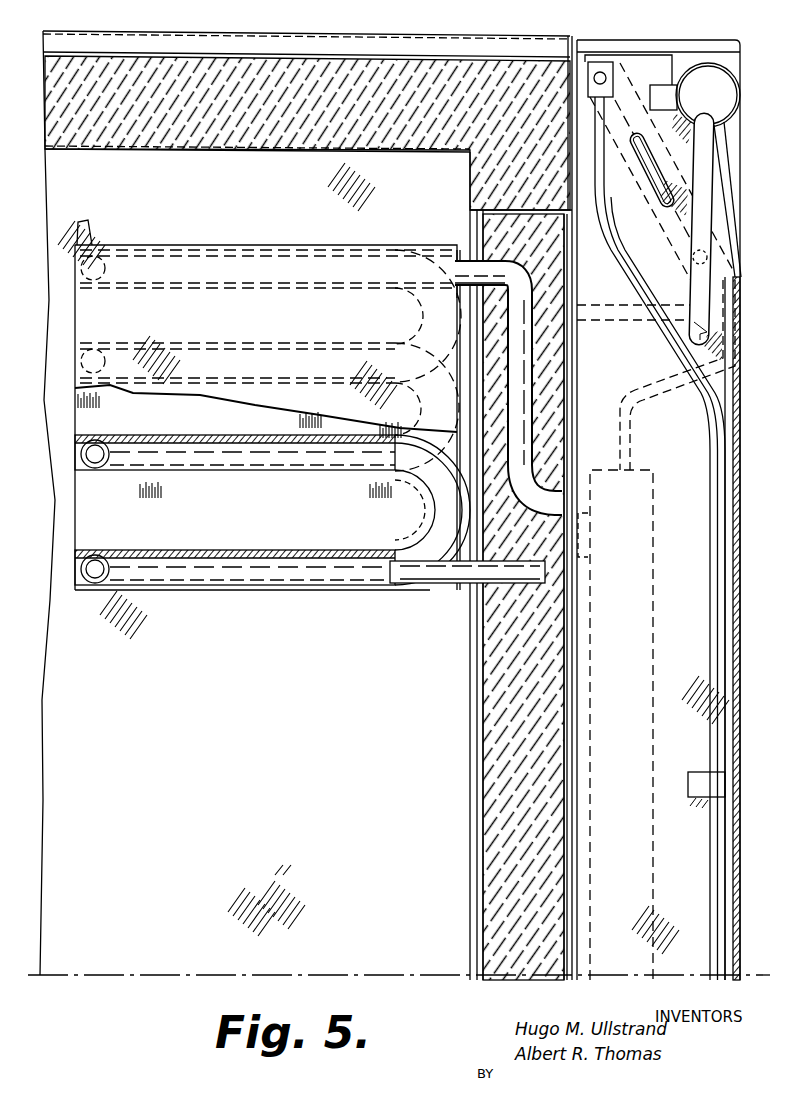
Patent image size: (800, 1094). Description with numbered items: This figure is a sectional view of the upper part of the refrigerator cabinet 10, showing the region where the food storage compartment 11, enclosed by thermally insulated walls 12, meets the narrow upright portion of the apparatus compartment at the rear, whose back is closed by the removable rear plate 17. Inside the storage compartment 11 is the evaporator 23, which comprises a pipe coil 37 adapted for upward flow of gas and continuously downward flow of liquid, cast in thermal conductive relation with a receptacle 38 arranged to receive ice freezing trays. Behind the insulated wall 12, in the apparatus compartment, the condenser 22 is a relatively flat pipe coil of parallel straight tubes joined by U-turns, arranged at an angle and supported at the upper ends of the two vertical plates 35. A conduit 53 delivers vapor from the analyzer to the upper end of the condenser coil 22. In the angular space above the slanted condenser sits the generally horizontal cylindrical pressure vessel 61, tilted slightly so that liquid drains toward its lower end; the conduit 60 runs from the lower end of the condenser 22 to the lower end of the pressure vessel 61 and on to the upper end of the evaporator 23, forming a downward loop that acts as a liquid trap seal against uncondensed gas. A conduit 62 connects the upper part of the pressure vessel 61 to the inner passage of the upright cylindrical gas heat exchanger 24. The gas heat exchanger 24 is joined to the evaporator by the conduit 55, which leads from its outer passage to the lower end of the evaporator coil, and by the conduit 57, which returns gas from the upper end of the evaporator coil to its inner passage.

The refrigerator cabinet 10 is at (384, 26).
The food storage compartment 11 is at (172, 503).
The thermally insulated walls 12 is at (246, 148).
The removable rear plate 17 is at (738, 428).
The condenser 22 is at (654, 182).
The evaporator 23 is at (262, 265).
The gas heat exchanger 24 is at (655, 595).
The plates 35 is at (726, 404).
The pipe coil 37 is at (88, 470).
The receptacle 38 is at (218, 438).
The conduit 53 is at (627, 277).
The conduit 55 is at (482, 574).
The conduit 57 is at (520, 402).
The conduit 60 is at (706, 163).
The pressure vessel 61 is at (736, 90).
The conduit 62 is at (732, 229).